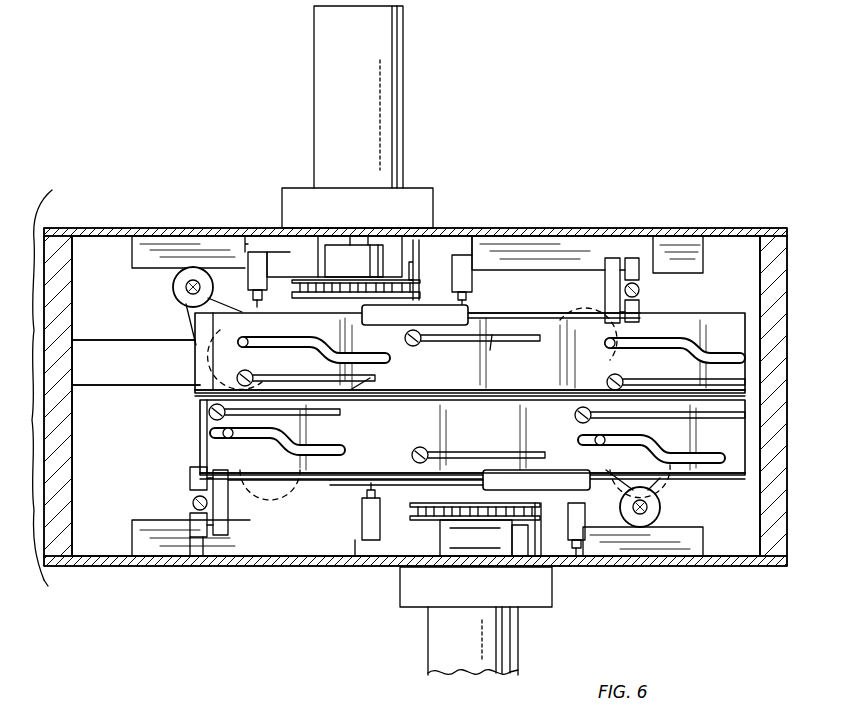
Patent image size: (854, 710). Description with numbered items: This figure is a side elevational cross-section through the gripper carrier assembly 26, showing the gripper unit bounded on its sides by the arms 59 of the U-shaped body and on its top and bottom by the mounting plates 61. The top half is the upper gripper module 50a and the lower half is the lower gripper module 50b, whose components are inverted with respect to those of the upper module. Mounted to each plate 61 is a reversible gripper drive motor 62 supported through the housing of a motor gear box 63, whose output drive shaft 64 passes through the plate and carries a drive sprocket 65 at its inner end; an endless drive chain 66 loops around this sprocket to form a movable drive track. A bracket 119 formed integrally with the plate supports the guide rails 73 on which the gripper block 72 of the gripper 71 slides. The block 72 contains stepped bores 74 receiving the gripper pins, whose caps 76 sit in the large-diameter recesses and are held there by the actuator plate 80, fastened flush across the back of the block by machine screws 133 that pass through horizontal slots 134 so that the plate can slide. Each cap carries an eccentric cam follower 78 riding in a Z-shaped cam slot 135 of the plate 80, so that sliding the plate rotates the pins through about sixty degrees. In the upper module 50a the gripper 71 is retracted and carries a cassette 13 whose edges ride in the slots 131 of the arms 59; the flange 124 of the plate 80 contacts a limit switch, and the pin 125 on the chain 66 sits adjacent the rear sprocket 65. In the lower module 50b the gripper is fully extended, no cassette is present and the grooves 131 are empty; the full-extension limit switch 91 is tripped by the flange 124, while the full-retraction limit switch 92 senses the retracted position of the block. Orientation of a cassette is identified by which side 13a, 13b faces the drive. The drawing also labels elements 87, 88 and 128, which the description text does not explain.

The cassette 13 is at (137, 396).
The cassette side 13a is at (97, 341).
The cassette side 13b is at (98, 385).
The gripper carrier assembly 26 is at (747, 125).
The upper gripper module 50a is at (59, 380).
The lower gripper module 50b is at (62, 580).
The arm 59 is at (60, 500).
The mounting plate 61 is at (560, 228).
The gripper drive motor 62 is at (398, 77).
The motor gear box 63 is at (434, 188).
The drive shaft 64 is at (360, 240).
The drive sprocket 65 is at (336, 242).
The endless drive chain 66 is at (306, 278).
The gripper 71 is at (164, 452).
The gripper block 72 is at (193, 372).
The rail 73 is at (186, 288).
The stepped bore 74 is at (195, 350).
The cap 76 is at (222, 345).
The cam follower 78 is at (290, 341).
The actuator plate 80 is at (475, 380).
The drive pulley 87 is at (195, 275).
The roller shaft 88 is at (640, 262).
The limit switch 91 is at (257, 252).
The limit switch 92 is at (468, 262).
The bracket 119 is at (524, 268).
The flange 124 is at (415, 322).
The pin 125 is at (420, 262).
The lower shaft assembly 128 is at (234, 588).
The slot 131 is at (74, 310).
The machine screw 133 is at (418, 465).
The horizontal slot 134 is at (368, 398).
The Z-shaped cam slot 135 is at (340, 450).